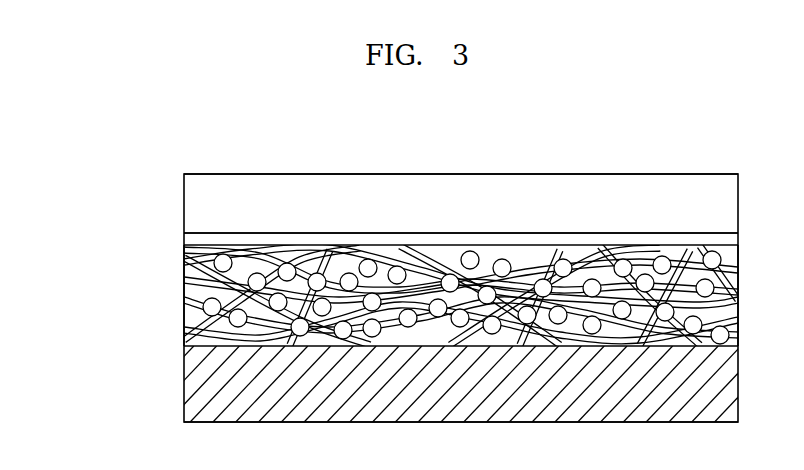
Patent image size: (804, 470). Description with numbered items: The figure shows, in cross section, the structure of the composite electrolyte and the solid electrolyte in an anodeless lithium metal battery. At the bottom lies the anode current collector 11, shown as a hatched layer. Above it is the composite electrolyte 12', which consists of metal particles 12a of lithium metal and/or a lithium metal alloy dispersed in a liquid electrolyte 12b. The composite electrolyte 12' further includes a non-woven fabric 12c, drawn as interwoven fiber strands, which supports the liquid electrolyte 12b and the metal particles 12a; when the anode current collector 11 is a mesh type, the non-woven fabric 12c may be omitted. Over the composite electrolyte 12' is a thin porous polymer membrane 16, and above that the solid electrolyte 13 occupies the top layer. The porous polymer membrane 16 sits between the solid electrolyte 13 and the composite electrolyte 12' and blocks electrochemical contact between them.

The anode current collector 11 is at (200, 382).
The composite electrolyte 12' is at (390, 298).
The metal particle 12a is at (193, 307).
The liquid electrolyte 12b is at (195, 327).
The non-woven fabric 12c is at (193, 282).
The solid electrolyte 13 is at (195, 198).
The porous polymer membrane 16 is at (195, 239).